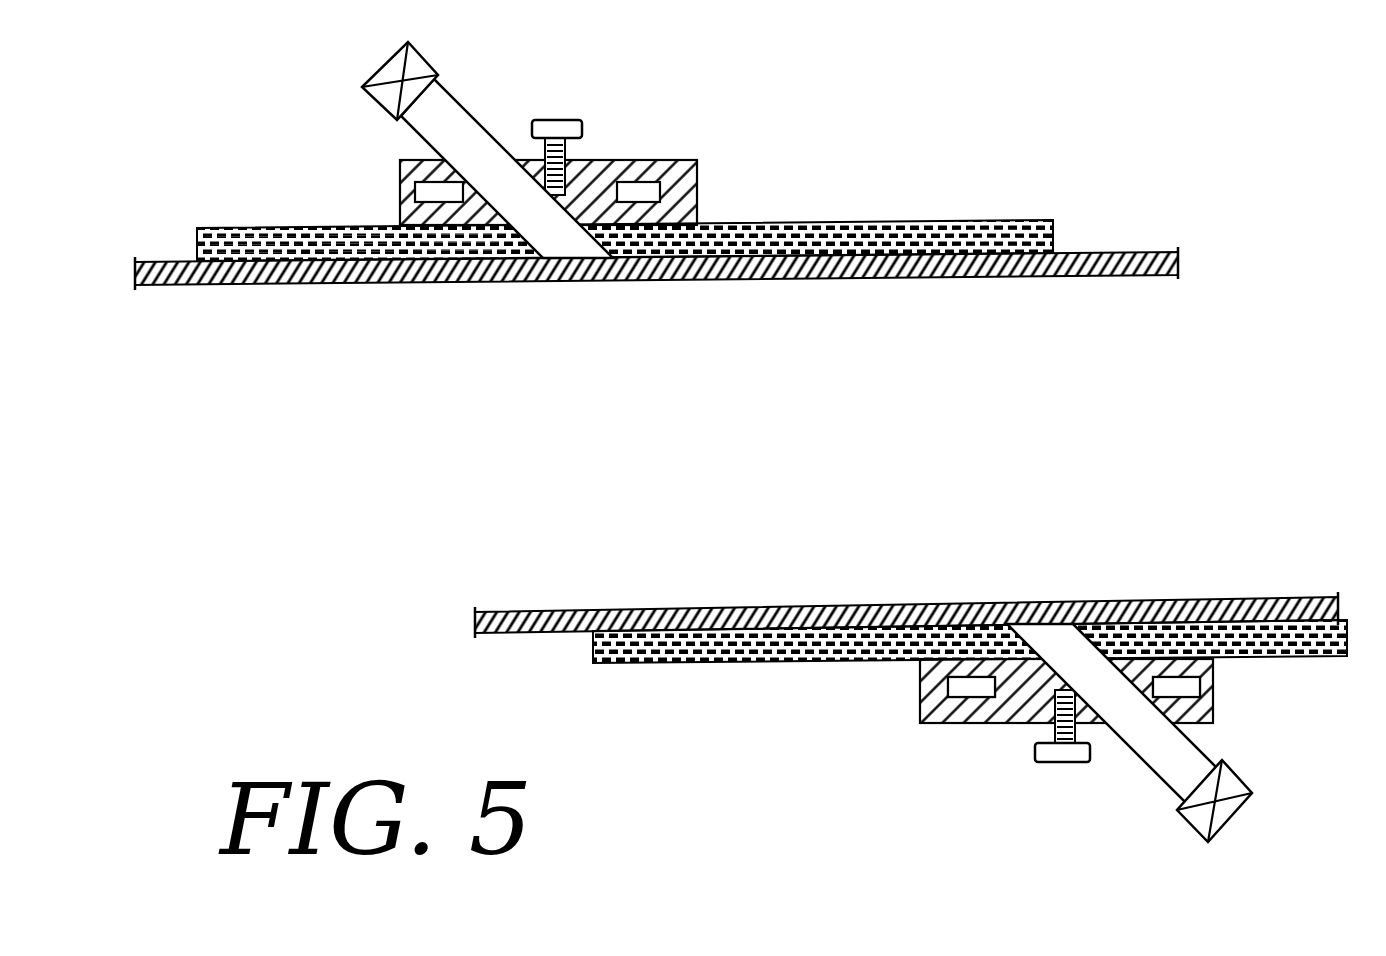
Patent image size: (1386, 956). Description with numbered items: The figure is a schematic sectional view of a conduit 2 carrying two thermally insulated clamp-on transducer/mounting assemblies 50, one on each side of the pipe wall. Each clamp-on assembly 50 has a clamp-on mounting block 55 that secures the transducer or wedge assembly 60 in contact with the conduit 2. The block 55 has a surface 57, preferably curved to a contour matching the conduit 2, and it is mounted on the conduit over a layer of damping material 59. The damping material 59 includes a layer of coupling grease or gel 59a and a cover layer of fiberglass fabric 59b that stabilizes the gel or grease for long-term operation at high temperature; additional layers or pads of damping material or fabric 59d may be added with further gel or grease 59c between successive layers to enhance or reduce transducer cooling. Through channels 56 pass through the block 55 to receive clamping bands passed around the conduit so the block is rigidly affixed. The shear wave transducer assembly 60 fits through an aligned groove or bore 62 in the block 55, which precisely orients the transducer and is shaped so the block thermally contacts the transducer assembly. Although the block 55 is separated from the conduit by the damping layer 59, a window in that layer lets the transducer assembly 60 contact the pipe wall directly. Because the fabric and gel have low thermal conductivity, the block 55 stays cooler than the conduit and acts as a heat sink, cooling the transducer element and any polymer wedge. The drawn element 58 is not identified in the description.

The conduit 2 is at (612, 461).
The thermally insulated clamp-on transducer/mounting assembly 50 is at (576, 63).
The clamp-on mounting block 55 is at (682, 157).
The through channel 56 is at (653, 192).
The surface 57 is at (713, 227).
The block top surface 58 is at (638, 158).
The layer of damping material 59 is at (1047, 218).
The layer of coupling grease or gel 59a is at (196, 258).
The cover layer of fiberglass fabric 59b is at (197, 248).
The further gel or grease 59c is at (233, 237).
The additional layer or pad of damping material or fabric 59d is at (327, 233).
The transducer or wedge assembly 60 is at (440, 100).
The aligned groove or bore 62 is at (508, 137).